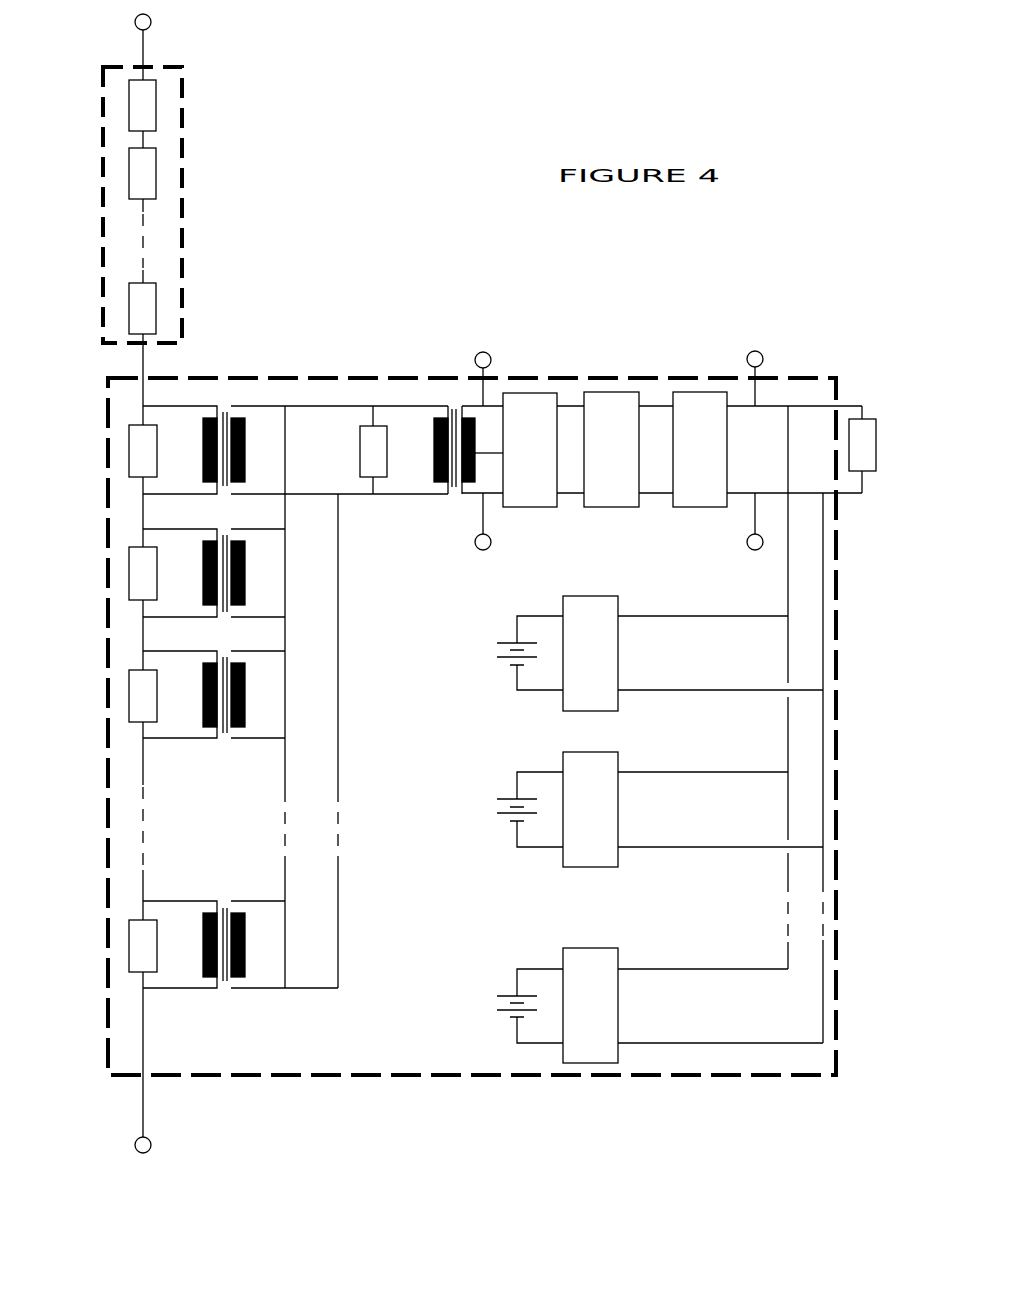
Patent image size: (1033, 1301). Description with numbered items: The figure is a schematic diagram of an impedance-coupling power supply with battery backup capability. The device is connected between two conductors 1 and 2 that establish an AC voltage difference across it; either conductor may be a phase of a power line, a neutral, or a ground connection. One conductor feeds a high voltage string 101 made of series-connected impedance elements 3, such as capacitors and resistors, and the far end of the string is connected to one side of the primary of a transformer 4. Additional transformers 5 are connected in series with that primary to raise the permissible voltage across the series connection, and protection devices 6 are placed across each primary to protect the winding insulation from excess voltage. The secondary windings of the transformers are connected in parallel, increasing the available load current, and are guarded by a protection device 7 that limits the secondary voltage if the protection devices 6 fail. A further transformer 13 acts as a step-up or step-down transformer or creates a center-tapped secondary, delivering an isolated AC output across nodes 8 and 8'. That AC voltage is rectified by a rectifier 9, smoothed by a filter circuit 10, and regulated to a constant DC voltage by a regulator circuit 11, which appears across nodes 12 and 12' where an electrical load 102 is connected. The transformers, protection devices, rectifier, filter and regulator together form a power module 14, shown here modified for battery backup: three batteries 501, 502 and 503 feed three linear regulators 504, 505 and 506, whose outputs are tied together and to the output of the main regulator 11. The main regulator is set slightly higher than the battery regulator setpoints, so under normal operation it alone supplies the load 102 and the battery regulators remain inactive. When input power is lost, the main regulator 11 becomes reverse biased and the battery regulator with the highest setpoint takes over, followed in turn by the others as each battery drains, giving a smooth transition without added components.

The conductor 1 is at (153, 23).
The conductor 2 is at (160, 1148).
The impedance elements 3 is at (150, 311).
The transformer 4 is at (223, 398).
The additional transformers 5 is at (270, 1005).
The protection devices 6 is at (137, 947).
The protection device 7 is at (375, 452).
The node 8 is at (483, 365).
The node 8' is at (482, 536).
The rectifier 9 is at (530, 450).
The filter circuit 10 is at (611, 449).
The regulator circuit 11 is at (700, 449).
The node 12 is at (762, 365).
The node 12' is at (762, 536).
The transformer 13 is at (453, 408).
The power module 14 is at (333, 1083).
The high voltage string 101 is at (185, 220).
The electrical load 102 is at (863, 452).
The battery 501 is at (515, 656).
The battery 502 is at (512, 812).
The battery 503 is at (512, 1008).
The linear regulator 504 is at (693, 653).
The linear regulator 505 is at (693, 809).
The linear regulator 506 is at (693, 1005).